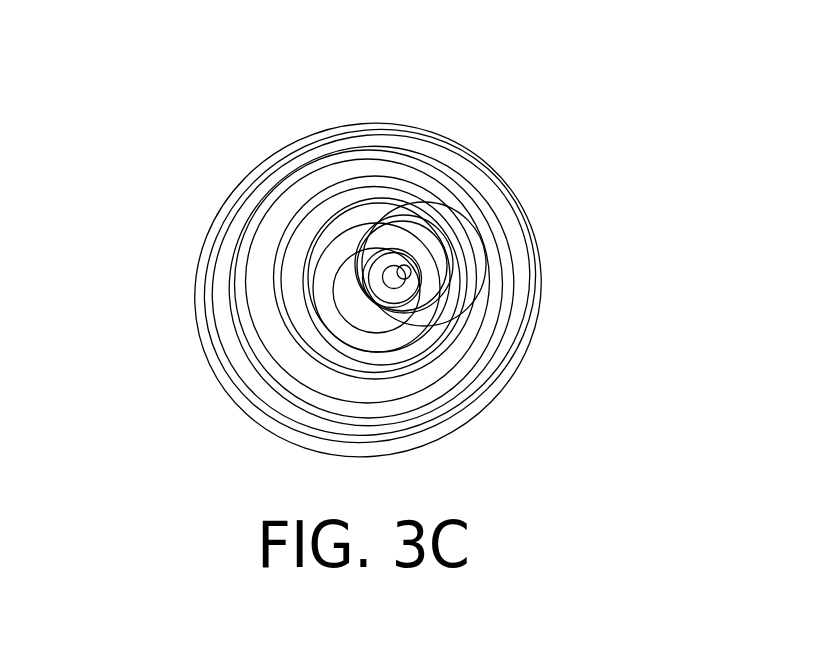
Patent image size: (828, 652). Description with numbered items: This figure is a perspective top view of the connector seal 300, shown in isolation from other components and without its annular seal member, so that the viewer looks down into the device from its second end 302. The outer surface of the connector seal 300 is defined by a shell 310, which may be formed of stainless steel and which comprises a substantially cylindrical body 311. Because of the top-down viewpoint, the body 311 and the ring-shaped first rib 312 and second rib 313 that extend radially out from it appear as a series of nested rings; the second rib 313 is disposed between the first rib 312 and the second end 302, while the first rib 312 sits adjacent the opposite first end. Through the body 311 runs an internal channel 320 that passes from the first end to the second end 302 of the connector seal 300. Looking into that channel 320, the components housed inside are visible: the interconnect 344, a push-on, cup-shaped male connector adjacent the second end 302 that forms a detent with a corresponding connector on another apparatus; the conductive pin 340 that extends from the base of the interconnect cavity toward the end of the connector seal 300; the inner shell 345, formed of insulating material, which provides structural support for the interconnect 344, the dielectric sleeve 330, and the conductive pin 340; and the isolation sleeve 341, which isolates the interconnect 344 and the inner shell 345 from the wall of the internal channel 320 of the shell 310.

The connector seal 300 is at (338, 270).
The second end 302 is at (369, 229).
The shell 310 is at (303, 277).
The body 311 is at (276, 307).
The first rib 312 is at (323, 285).
The second rib 313 is at (379, 286).
The internal channel 320 is at (489, 234).
The dielectric sleeve 330 is at (511, 317).
The conductive pin 340 is at (461, 180).
The isolation sleeve 341 is at (336, 244).
The interconnect 344 is at (505, 274).
The inner shell 345 is at (464, 141).